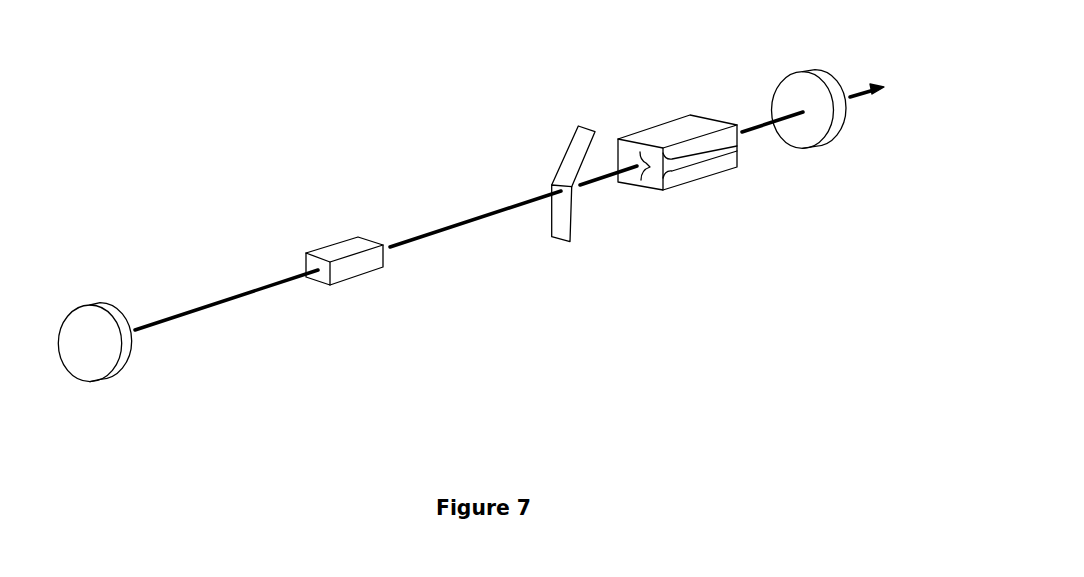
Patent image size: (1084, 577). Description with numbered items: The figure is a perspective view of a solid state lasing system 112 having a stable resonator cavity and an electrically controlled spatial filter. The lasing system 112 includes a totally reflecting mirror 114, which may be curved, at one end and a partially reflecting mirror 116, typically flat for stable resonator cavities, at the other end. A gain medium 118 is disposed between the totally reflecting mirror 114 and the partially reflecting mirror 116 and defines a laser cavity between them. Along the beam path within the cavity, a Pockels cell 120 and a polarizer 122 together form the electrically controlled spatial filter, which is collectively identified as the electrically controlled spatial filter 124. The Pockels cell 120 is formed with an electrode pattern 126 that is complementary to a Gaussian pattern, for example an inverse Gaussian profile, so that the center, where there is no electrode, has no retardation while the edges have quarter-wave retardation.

The solid state lasing system 112 is at (878, 52).
The totally reflecting mirror 114 is at (123, 362).
The partially reflecting mirror 116 is at (828, 143).
The gain medium 118 is at (362, 277).
The Pockels cell 120 is at (705, 120).
The polarizer 122 is at (567, 148).
The electrically controlled spatial filter 124 is at (760, 90).
The electrode pattern 126 is at (687, 183).